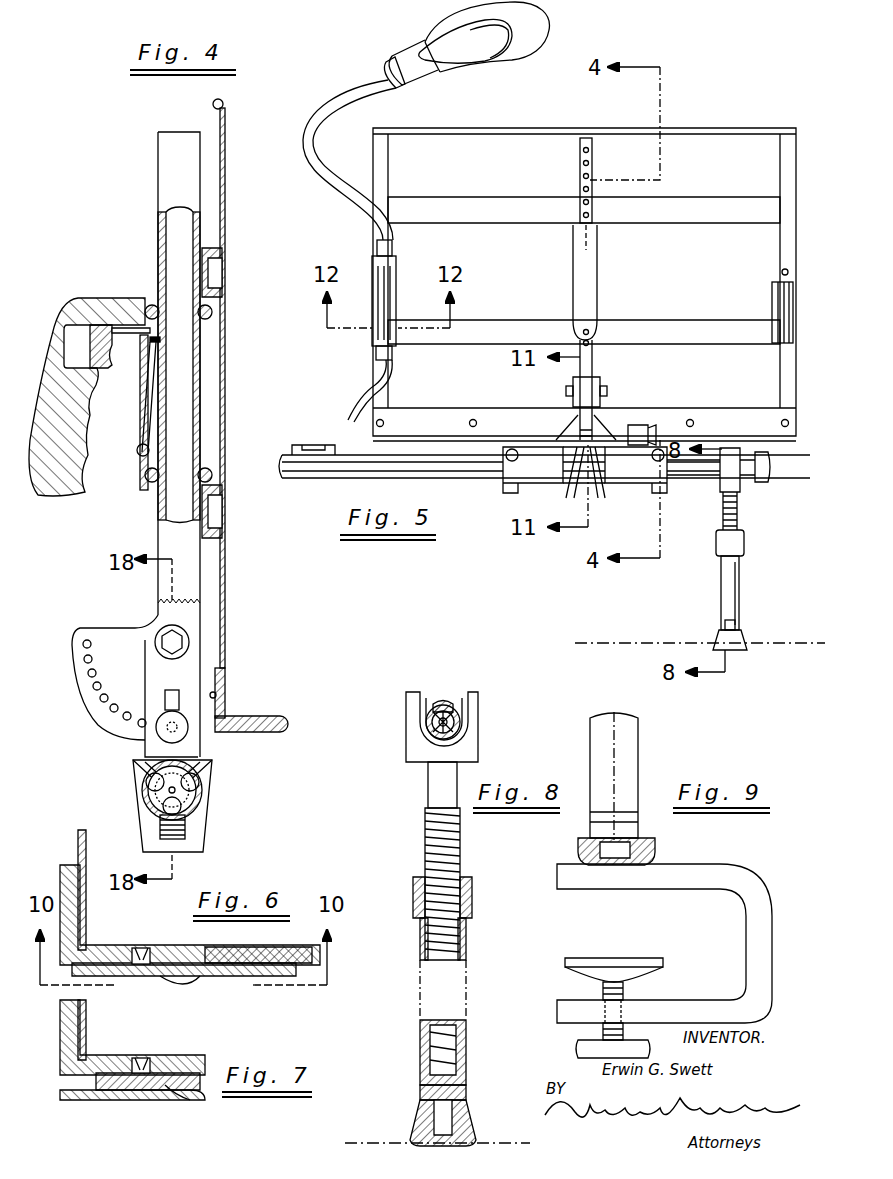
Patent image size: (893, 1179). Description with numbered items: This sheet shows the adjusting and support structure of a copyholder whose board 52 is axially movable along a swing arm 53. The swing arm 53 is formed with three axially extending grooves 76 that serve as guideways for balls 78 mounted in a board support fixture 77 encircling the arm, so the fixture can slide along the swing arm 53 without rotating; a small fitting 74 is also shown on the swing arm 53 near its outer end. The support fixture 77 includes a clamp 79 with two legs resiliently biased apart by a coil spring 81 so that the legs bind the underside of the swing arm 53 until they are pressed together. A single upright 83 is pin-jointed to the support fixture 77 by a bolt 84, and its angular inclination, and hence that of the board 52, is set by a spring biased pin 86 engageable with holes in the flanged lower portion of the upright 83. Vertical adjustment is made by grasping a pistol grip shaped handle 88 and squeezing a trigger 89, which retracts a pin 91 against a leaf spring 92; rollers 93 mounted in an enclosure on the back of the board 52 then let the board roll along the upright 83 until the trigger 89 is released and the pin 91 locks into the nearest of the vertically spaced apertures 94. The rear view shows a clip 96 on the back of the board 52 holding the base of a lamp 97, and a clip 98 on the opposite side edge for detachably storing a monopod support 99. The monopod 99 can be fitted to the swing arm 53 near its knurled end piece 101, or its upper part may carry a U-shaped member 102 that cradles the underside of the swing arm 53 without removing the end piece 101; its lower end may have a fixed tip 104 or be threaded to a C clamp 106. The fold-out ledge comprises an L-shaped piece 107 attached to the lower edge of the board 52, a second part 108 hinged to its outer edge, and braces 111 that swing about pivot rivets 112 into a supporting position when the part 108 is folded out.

In FIG. 4, the board 52 is at (228, 500).
In FIG. 6, the board 52 is at (88, 858).
In FIG. 7, the board 52 is at (88, 1020).
In FIG. 5, the board 52 is at (712, 122).
In FIG. 4, the swing arm 53 is at (208, 793).
In FIG. 5, the swing arm 53 is at (350, 480).
In FIG. 8, the swing arm 53 is at (450, 695).
In FIG. 5, the stop block 74 is at (318, 445).
In FIG. 4, the axially extending grooves 76 is at (163, 818).
In FIG. 8, the axially extending grooves 76 is at (428, 705).
In FIG. 4, the board support fixture 77 is at (138, 622).
In FIG. 5, the board support fixture 77 is at (535, 492).
In FIG. 4, the balls 78 is at (150, 783).
In FIG. 4, the clamp 79 is at (205, 822).
In FIG. 5, the clamp 79 is at (604, 497).
In FIG. 5, the coil spring 81 is at (570, 495).
In FIG. 4, the upright 83 is at (170, 160).
In FIG. 5, the upright 83 is at (595, 362).
In FIG. 4, the bolt 84 is at (178, 643).
In FIG. 5, the bolt 84 is at (604, 390).
In FIG. 4, the spring biased pin 86 is at (182, 730).
In FIG. 5, the spring biased pin 86 is at (640, 425).
In FIG. 4, the pistol grip shaped handle 88 is at (70, 438).
In FIG. 5, the pistol grip shaped handle 88 is at (597, 265).
In FIG. 4, the trigger 89 is at (104, 368).
In FIG. 4, the pin 91 is at (175, 342).
In FIG. 4, the leaf spring 92 is at (150, 385).
In FIG. 4, the rollers 93 is at (200, 312).
In FIG. 4, the vertically spaced apertures 94 is at (160, 262).
In FIG. 5, the vertically spaced apertures 94 is at (583, 163).
In FIG. 5, the clip 96 is at (394, 302).
In FIG. 5, the lamp 97 is at (398, 48).
In FIG. 5, the clip 98 is at (772, 300).
In FIG. 5, the monopod support 99 is at (735, 578).
In FIG. 8, the monopod support 99 is at (470, 950).
In FIG. 9, the monopod support 99 is at (640, 762).
In FIG. 5, the knurled end piece 101 is at (760, 482).
In FIG. 8, the U-shaped member 102 is at (470, 745).
In FIG. 5, the fixed tip 104 is at (720, 640).
In FIG. 8, the fixed tip 104 is at (468, 1130).
In FIG. 9, the C clamp 106 is at (728, 872).
In FIG. 6, the L-shaped piece 107 is at (62, 882).
In FIG. 7, the L-shaped piece 107 is at (62, 1052).
In FIG. 6, the second part 108 is at (255, 952).
In FIG. 7, the second part 108 is at (100, 1105).
In FIG. 6, the braces 111 is at (225, 975).
In FIG. 7, the braces 111 is at (98, 1080).
In FIG. 6, the pivot rivets 112 is at (143, 950).
In FIG. 7, the pivot rivets 112 is at (143, 1060).